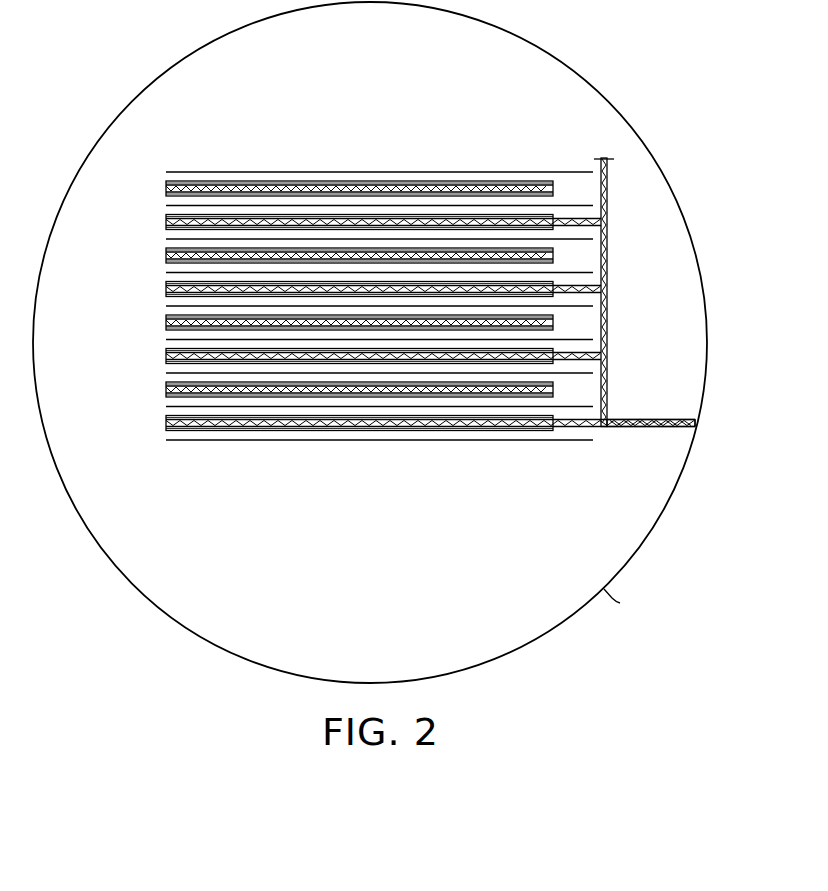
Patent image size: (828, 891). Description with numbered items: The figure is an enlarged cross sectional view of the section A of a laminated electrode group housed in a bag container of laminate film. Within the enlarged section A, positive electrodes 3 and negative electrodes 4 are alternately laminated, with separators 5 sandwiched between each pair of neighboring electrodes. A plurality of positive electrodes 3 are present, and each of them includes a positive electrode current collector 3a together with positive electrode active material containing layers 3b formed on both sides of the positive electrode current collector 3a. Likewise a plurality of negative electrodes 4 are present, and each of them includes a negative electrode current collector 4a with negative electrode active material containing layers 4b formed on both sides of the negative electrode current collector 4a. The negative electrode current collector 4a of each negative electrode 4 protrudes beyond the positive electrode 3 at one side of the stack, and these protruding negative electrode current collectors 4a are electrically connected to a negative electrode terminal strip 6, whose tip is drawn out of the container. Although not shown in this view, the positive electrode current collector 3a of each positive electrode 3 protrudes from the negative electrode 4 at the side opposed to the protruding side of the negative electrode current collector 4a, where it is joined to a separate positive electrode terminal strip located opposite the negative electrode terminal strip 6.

The positive electrode 3 is at (153, 188).
The positive electrode current collector 3a is at (172, 390).
The positive electrode active material containing layer 3b is at (172, 384).
The negative electrode 4 is at (153, 222).
The negative electrode current collector 4a is at (588, 222).
The negative electrode active material containing layer 4b is at (170, 418).
The separator 5 is at (437, 171).
The negative electrode terminal strip 6 is at (648, 428).
The section A is at (619, 604).